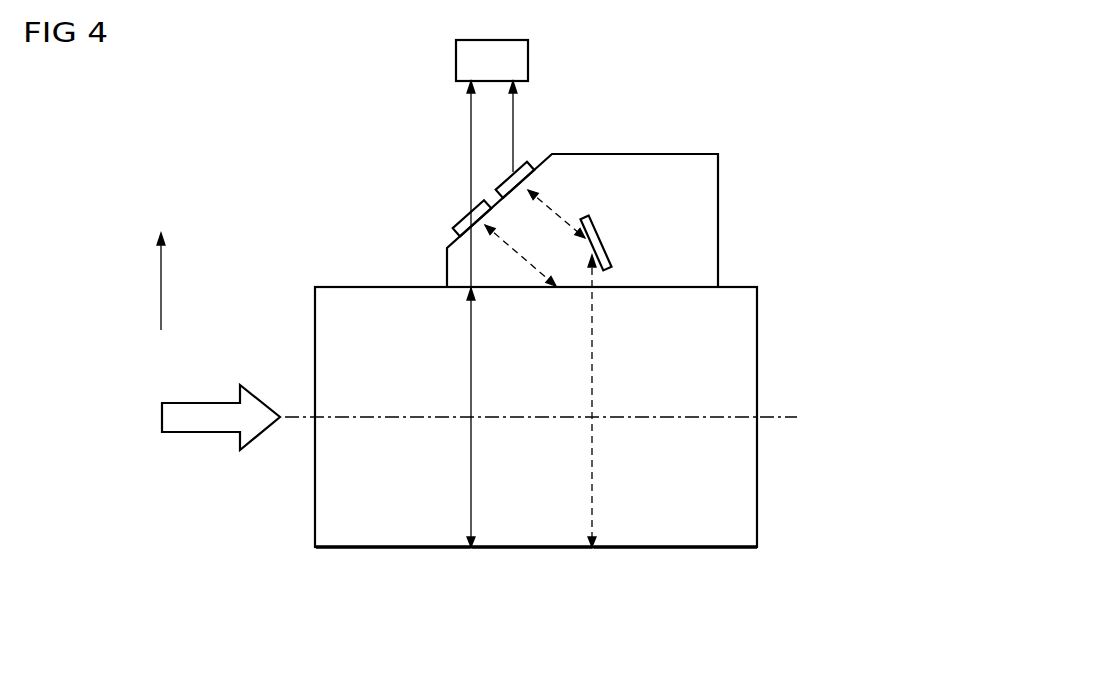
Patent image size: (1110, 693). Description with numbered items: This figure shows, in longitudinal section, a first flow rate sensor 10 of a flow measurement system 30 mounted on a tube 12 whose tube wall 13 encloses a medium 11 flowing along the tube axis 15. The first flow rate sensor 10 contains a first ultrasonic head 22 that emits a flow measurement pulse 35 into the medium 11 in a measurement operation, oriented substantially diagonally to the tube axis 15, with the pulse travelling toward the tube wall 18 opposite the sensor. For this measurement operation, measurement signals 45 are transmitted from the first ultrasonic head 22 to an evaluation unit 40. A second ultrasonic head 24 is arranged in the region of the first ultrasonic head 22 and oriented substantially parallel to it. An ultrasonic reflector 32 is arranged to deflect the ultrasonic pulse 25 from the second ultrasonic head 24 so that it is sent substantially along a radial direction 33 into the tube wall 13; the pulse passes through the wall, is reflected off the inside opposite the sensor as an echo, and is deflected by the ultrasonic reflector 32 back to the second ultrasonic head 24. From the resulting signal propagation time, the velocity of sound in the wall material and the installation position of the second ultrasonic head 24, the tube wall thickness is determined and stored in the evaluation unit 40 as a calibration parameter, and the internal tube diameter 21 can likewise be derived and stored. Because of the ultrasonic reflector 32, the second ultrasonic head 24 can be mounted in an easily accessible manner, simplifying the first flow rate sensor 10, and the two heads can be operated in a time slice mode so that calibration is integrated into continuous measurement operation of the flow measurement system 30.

The flow measurement system 30 is at (273, 48).
The first flow rate sensor 10 is at (460, 265).
The evaluation unit 40 is at (528, 60).
The internal tube diameter 21 is at (470, 376).
The measurement signals 45 is at (471, 104).
The first ultrasonic head 22 is at (468, 218).
The second ultrasonic head 24 is at (506, 183).
The ultrasonic reflector 32 is at (606, 240).
The flow measurement pulse 35 is at (523, 261).
The ultrasonic pulse 25 is at (552, 210).
The tube axis 15 is at (797, 420).
The medium 11 is at (205, 403).
The radial direction 33 is at (161, 279).
The tube 12 is at (335, 550).
The tube wall 18 is at (550, 550).
The tube wall 13 is at (730, 550).